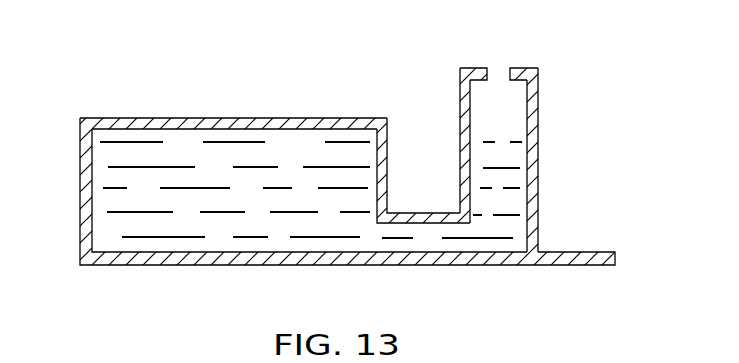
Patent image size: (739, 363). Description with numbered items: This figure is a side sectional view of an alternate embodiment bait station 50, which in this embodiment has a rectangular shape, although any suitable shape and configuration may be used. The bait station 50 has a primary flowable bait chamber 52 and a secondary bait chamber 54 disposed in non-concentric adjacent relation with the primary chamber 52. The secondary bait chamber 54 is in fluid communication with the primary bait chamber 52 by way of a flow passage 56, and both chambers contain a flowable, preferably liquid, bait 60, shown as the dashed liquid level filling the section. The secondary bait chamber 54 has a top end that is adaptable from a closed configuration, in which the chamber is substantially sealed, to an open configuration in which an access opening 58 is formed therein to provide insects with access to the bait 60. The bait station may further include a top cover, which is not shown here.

The bait station 50 is at (122, 105).
The primary flowable bait chamber 52 is at (292, 135).
The secondary bait chamber 54 is at (535, 110).
The flow passage 56 is at (460, 212).
The access opening 58 is at (502, 70).
The flowable bait 60 is at (223, 205).